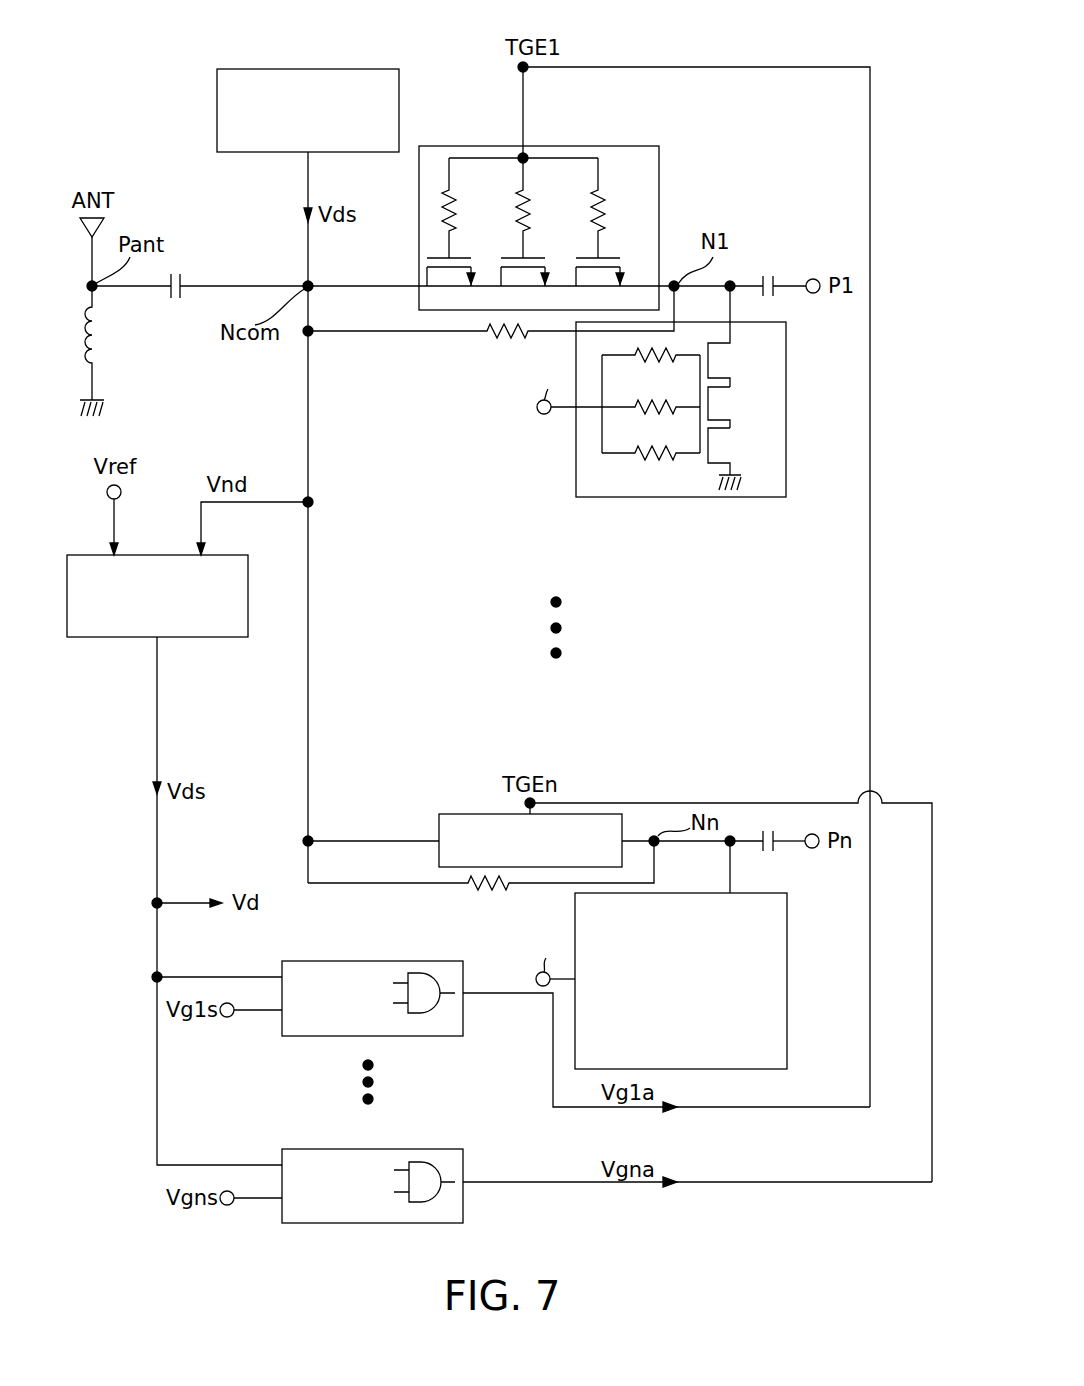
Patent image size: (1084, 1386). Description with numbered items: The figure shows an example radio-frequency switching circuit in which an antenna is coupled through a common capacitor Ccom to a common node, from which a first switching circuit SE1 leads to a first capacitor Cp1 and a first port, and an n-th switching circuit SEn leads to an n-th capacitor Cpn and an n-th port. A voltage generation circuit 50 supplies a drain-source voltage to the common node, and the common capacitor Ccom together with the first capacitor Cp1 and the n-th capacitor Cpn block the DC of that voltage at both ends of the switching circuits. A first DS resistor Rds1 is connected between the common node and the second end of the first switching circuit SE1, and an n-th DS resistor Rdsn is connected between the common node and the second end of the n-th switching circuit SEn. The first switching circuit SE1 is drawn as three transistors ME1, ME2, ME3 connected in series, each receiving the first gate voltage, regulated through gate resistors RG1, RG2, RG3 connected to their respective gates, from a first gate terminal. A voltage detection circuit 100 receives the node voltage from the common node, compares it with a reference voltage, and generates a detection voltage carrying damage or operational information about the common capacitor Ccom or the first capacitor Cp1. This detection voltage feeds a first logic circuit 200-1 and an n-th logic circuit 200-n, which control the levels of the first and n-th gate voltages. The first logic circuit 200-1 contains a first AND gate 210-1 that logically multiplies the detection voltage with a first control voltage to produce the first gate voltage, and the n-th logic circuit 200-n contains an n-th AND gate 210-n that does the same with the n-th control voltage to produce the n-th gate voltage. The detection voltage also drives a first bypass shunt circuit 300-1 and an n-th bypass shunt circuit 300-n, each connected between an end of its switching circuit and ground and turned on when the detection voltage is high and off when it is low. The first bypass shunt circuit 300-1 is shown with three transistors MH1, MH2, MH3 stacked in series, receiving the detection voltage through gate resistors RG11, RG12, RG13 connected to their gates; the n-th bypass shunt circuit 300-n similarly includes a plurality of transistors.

The voltage generation circuit 50 is at (280, 68).
The voltage detection circuit 100 is at (215, 639).
The first logic circuit 200-1 is at (283, 963).
The n-th logic circuit 200-n is at (285, 1153).
The first AND gate 210-1 is at (418, 972).
The n-th AND gate 210-n is at (432, 1173).
The first bypass shunt circuit 300-1 is at (576, 446).
The n-th bypass shunt circuit 300-n is at (646, 955).
The first switching circuit SE1 is at (539, 211).
The n-th switching circuit SEn is at (530, 835).
The common capacitor Ccom is at (175, 299).
The first capacitor Cp1 is at (769, 297).
The n-th capacitor Cpn is at (767, 855).
The first DS resistor Rds1 is at (491, 325).
The n-th DS resistor Rdsn is at (481, 880).
The gate resistor RG1 is at (475, 208).
The gate resistor RG2 is at (548, 208).
The gate resistor RG3 is at (623, 208).
The transistor ME1 is at (451, 284).
The transistor ME2 is at (525, 284).
The transistor ME3 is at (600, 284).
The gate resistor RG11 is at (651, 369).
The gate resistor RG12 is at (625, 420).
The gate resistor RG13 is at (651, 466).
The transistor MH1 is at (742, 336).
The transistor MH2 is at (742, 407).
The transistor MH3 is at (742, 451).